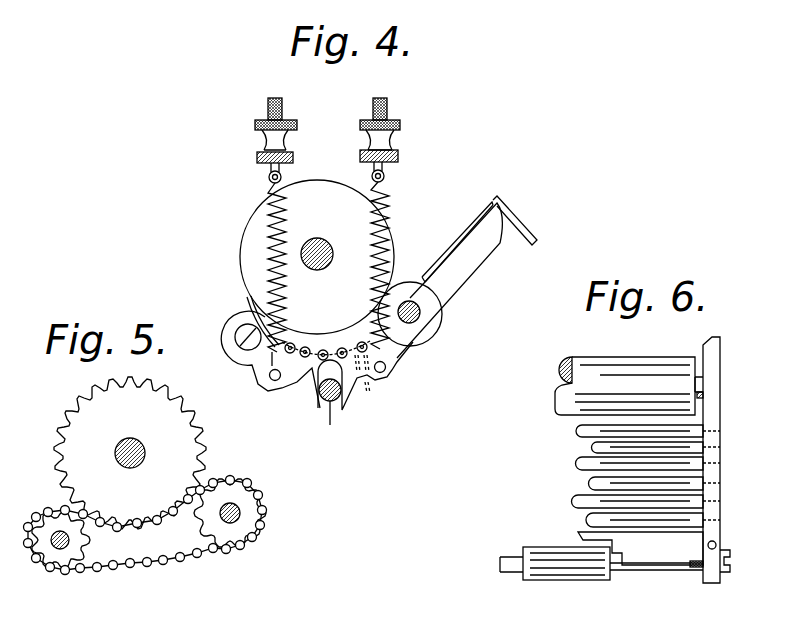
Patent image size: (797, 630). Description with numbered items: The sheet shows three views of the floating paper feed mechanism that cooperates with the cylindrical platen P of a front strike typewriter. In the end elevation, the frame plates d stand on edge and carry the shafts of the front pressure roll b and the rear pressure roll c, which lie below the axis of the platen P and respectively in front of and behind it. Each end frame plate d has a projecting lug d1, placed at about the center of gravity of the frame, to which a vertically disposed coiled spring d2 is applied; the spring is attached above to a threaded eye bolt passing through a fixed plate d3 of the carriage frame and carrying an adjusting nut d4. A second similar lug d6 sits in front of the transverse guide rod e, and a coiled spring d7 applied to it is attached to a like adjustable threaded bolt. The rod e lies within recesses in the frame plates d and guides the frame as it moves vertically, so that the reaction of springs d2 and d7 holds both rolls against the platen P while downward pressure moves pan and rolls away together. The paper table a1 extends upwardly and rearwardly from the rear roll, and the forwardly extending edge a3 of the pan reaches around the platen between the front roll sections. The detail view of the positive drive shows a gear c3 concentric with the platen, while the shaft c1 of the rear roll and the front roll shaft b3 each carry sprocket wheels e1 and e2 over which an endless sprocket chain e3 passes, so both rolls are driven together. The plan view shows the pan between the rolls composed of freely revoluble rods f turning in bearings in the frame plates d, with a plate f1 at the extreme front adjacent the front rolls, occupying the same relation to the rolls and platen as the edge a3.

In FIG. 4, the platen P is at (317, 257).
In FIG. 4, the adjusting nut d4 is at (255, 125).
In FIG. 4, the fixed plate of the carriage frame d3 is at (257, 157).
In FIG. 4, the coiled spring d7 is at (270, 238).
In FIG. 4, the coiled spring d2 is at (384, 212).
In FIG. 4, the forwardly extending edge of the pan a3 is at (248, 302).
In FIG. 4, the frame plate d is at (310, 370).
In FIG. 6, the frame plate d is at (708, 413).
In FIG. 4, the lug d6 is at (277, 382).
In FIG. 4, the projecting stud or lug d1 is at (389, 375).
In FIG. 4, the transverse rod e is at (330, 412).
In FIG. 4, the freely revoluble rods f is at (363, 384).
In FIG. 6, the freely revoluble rods f is at (583, 457).
In FIG. 4, the endless sprocket chain e3 is at (326, 350).
In FIG. 5, the endless sprocket chain e3 is at (147, 565).
In FIG. 4, the shaft of the rear feed roll c1 is at (422, 317).
In FIG. 5, the shaft of the rear feed roll c1 is at (240, 511).
In FIG. 4, the rear pressure roll c is at (443, 313).
In FIG. 6, the rear pressure roll c is at (637, 377).
In FIG. 4, the paper table a1 is at (457, 243).
In FIG. 5, the gear c3 is at (56, 438).
In FIG. 5, the sprocket wheel e1 is at (238, 527).
In FIG. 5, the shaft of the front roll sections b3 is at (52, 552).
In FIG. 5, the sprocket wheel e2 is at (68, 553).
In FIG. 6, the plate f1 is at (665, 547).
In FIG. 6, the front pressure roll b is at (582, 567).